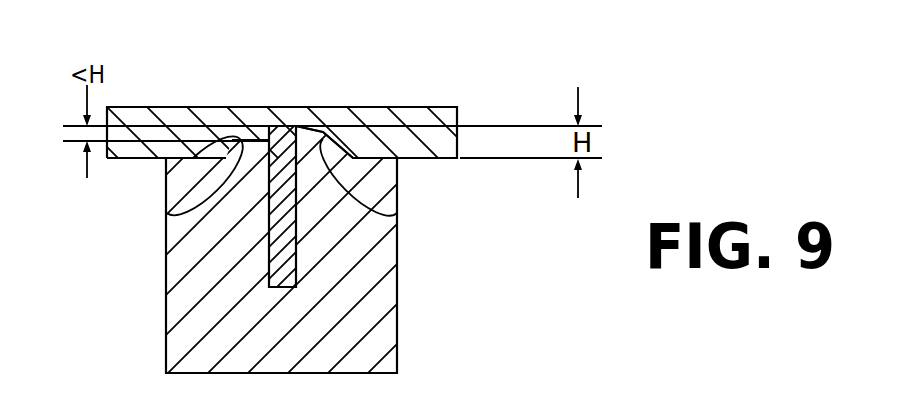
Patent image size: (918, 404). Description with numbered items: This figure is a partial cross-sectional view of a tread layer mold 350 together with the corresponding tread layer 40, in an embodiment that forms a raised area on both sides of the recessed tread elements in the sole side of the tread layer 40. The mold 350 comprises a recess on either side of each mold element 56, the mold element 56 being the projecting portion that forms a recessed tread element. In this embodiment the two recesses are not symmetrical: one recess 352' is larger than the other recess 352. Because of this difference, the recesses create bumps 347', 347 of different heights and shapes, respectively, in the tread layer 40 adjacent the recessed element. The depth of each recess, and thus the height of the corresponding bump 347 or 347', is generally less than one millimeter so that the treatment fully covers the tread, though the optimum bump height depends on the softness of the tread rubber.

The tread layer 40 is at (360, 329).
The mold element 56 is at (297, 257).
The bump 347 is at (246, 93).
The bump 347' is at (324, 98).
The mold 350 is at (378, 104).
The recess 352 is at (170, 181).
The recess 352' is at (395, 182).